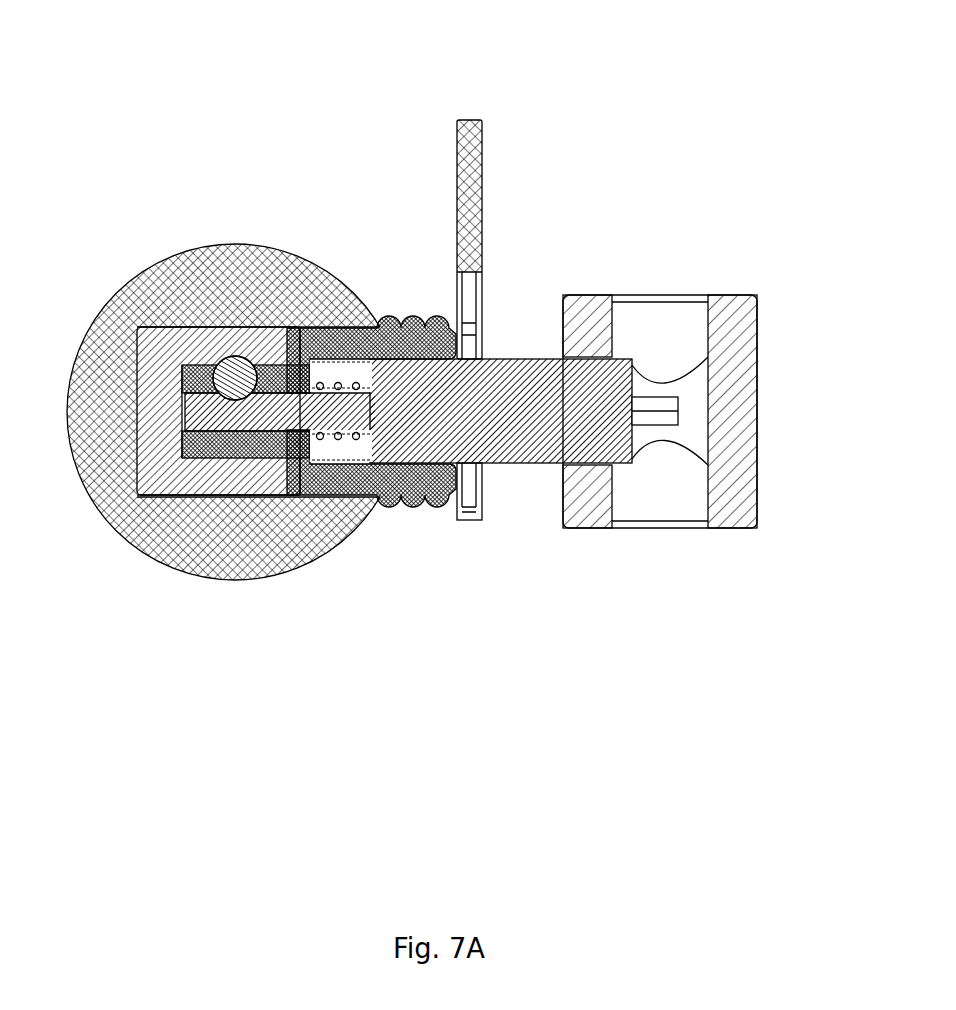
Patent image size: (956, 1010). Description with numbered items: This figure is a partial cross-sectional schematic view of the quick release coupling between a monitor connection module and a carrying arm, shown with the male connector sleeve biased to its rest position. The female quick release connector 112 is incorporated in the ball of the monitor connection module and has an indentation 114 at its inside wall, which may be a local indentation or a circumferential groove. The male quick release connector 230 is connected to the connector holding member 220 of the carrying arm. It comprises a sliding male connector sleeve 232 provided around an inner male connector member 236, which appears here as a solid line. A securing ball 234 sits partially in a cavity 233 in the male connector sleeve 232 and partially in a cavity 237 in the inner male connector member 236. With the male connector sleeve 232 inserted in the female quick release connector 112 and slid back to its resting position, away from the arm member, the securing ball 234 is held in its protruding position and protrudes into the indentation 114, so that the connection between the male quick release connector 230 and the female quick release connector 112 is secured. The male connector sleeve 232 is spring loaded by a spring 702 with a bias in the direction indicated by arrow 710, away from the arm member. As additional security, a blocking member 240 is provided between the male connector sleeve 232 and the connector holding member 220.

The female quick release connector 112 is at (177, 412).
The indentation 114 is at (208, 480).
The connector holding member 220 is at (605, 508).
The male quick release connector 230 is at (550, 745).
The male connector sleeve 232 is at (433, 493).
The cavity 233 is at (287, 355).
The securing ball 234 is at (261, 350).
The inner male connector member 236 is at (177, 412).
The cavity 237 is at (303, 480).
The blocking member 240 is at (481, 127).
The spring 702 is at (330, 383).
The arrow 710 is at (473, 548).